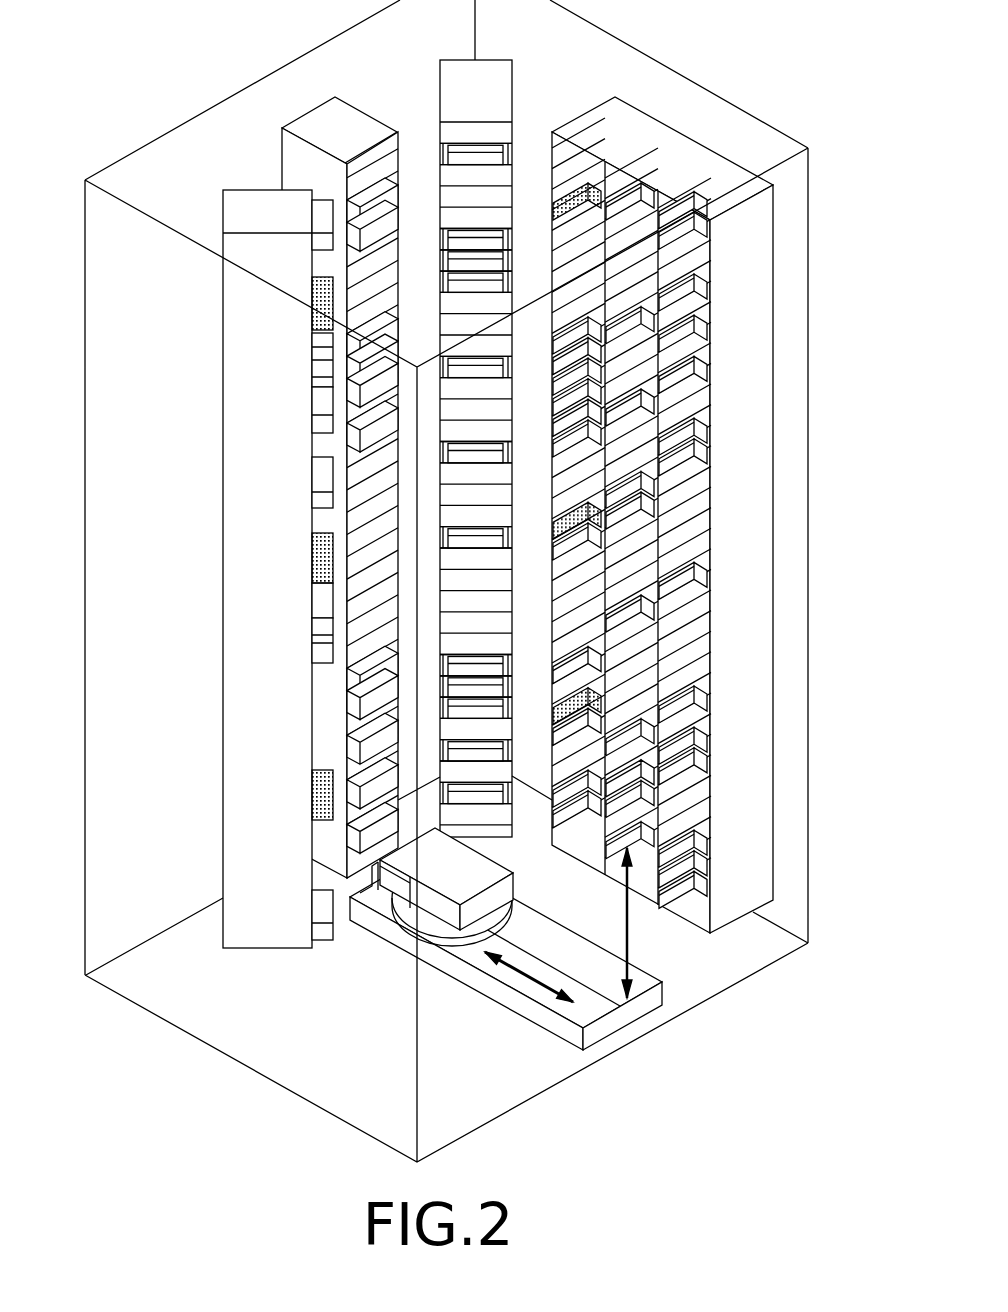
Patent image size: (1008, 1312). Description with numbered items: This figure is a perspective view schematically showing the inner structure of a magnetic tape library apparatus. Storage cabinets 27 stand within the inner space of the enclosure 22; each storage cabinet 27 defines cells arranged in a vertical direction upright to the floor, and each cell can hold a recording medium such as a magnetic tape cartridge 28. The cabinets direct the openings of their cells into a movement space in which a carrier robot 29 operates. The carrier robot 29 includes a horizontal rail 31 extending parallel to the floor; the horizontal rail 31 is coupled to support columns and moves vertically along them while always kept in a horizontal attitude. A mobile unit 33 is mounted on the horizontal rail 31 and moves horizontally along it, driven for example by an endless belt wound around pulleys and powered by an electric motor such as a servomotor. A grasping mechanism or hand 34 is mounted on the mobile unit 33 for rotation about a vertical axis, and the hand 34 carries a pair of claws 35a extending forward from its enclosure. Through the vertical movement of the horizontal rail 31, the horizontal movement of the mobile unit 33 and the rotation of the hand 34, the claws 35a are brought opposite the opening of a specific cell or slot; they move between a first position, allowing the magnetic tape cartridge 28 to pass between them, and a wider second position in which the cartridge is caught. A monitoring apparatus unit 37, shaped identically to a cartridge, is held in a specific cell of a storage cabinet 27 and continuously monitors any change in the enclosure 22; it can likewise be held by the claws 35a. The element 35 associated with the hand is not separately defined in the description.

The enclosure 22 is at (182, 122).
The storage cabinet 27 is at (775, 213).
The magnetic tape cartridge 28 is at (320, 915).
The monitoring apparatus unit 37 is at (317, 790).
The carrier robot 29 is at (479, 957).
The horizontal rail 31 is at (538, 1025).
The mobile unit 33 is at (507, 922).
The grasping mechanism or hand 34 is at (508, 888).
The arm 35 is at (363, 895).
The claw 35a is at (382, 880).